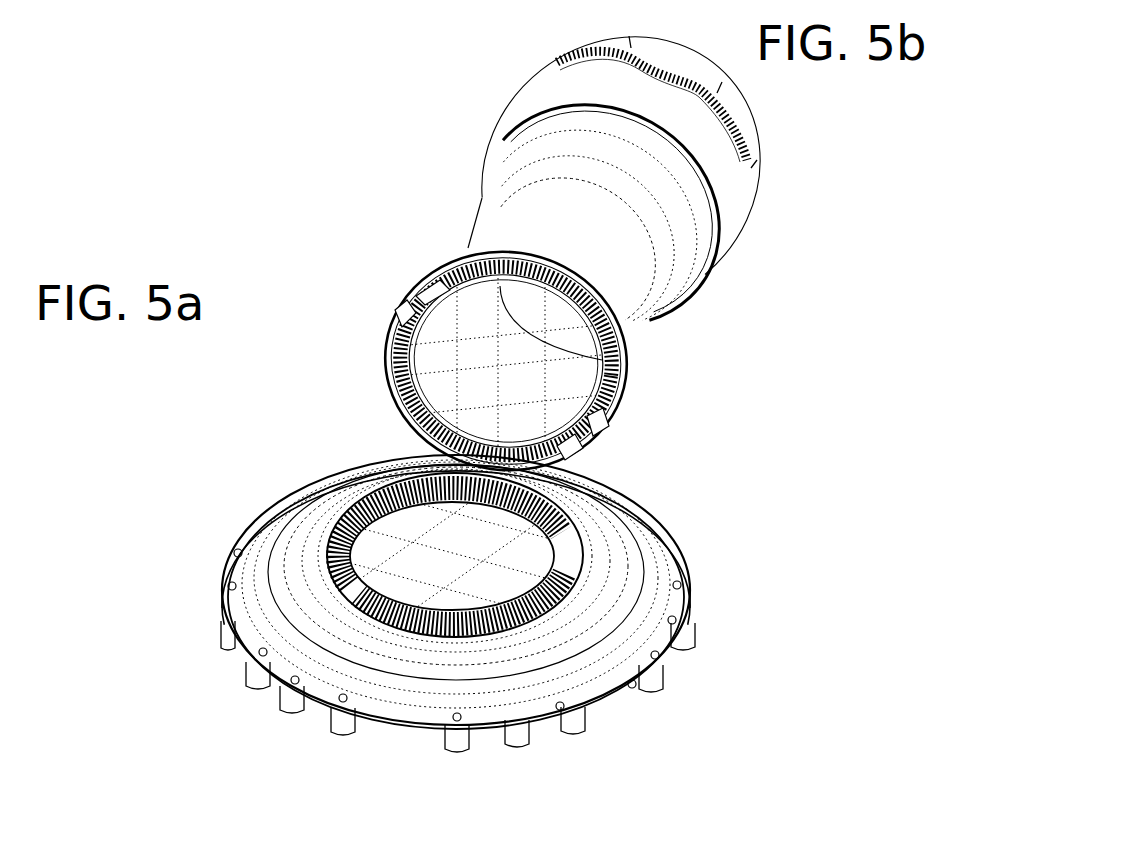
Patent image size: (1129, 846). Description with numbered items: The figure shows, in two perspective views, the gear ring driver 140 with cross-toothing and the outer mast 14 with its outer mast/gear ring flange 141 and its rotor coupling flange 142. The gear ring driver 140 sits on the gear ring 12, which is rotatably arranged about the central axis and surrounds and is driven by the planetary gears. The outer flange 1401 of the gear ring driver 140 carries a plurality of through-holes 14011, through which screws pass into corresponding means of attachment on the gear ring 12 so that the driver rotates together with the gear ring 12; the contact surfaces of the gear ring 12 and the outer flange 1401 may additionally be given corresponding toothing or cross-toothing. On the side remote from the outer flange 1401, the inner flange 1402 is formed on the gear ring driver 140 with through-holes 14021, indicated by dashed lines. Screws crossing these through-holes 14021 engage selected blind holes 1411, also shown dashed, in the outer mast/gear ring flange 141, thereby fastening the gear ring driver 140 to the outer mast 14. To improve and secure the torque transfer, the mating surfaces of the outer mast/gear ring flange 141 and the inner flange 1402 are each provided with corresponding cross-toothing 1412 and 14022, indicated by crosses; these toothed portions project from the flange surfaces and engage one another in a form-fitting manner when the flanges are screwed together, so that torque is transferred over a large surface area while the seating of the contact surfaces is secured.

In FIG. 5a, the gear ring 12 is at (655, 680).
In FIG. 5b, the outer mast 14 is at (743, 108).
In FIG. 5a, the gear ring driver 140 is at (262, 478).
In FIG. 5a, the outer flange 1401 is at (240, 532).
In FIG. 5a, the through-holes 14011 is at (230, 553).
In FIG. 5a, the inner flange 1402 is at (343, 572).
In FIG. 5a, the through-holes 14021 is at (418, 636).
In FIG. 5a, the cross-toothing 14022 is at (410, 610).
In FIG. 5b, the outer mast/gear ring flange 141 is at (617, 342).
In FIG. 5b, the blind holes 1411 is at (620, 357).
In FIG. 5b, the cross-toothing 1412 is at (558, 465).
In FIG. 5b, the rotor coupling flange 142 is at (743, 182).